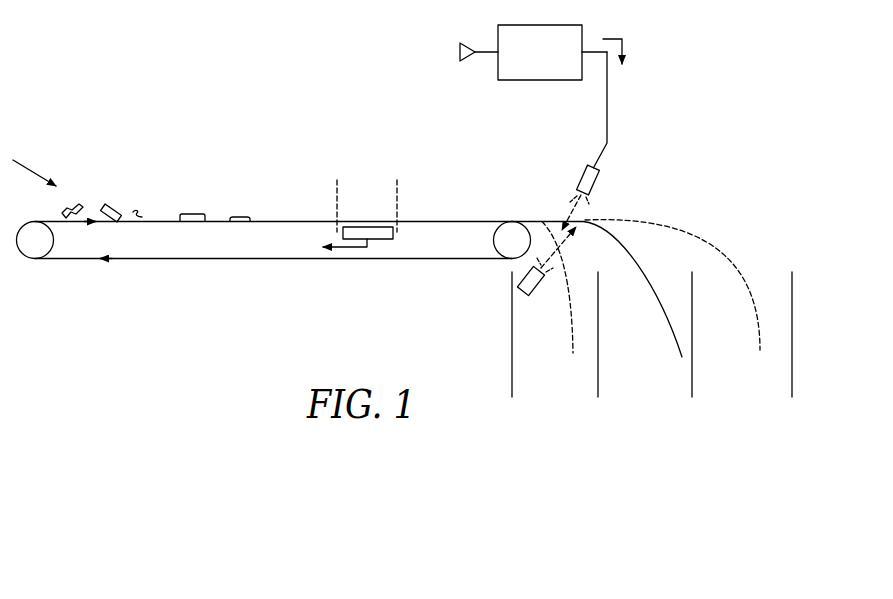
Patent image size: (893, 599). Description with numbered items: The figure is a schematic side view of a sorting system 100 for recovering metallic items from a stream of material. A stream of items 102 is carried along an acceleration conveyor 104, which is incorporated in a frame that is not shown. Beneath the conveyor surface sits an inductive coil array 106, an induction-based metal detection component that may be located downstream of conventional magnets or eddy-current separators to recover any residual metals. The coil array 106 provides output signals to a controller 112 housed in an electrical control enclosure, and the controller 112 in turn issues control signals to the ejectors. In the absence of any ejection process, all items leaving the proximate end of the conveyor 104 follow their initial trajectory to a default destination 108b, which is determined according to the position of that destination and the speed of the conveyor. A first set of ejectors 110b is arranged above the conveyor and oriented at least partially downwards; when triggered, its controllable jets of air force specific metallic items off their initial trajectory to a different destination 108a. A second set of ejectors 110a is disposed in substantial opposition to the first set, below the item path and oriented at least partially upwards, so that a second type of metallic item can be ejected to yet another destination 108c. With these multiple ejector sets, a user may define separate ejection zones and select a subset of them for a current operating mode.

The sorting system 100 is at (98, 82).
The stream of items 102 is at (75, 200).
The acceleration conveyor 104 is at (163, 250).
The inductive coil arrays 106 is at (375, 249).
The different destination 108a is at (555, 387).
The default destination 108b is at (650, 387).
The yet another destination 108c is at (748, 387).
The second set of ejectors 110a is at (523, 292).
The first set of ejectors 110b is at (600, 184).
The controller 112 is at (542, 78).